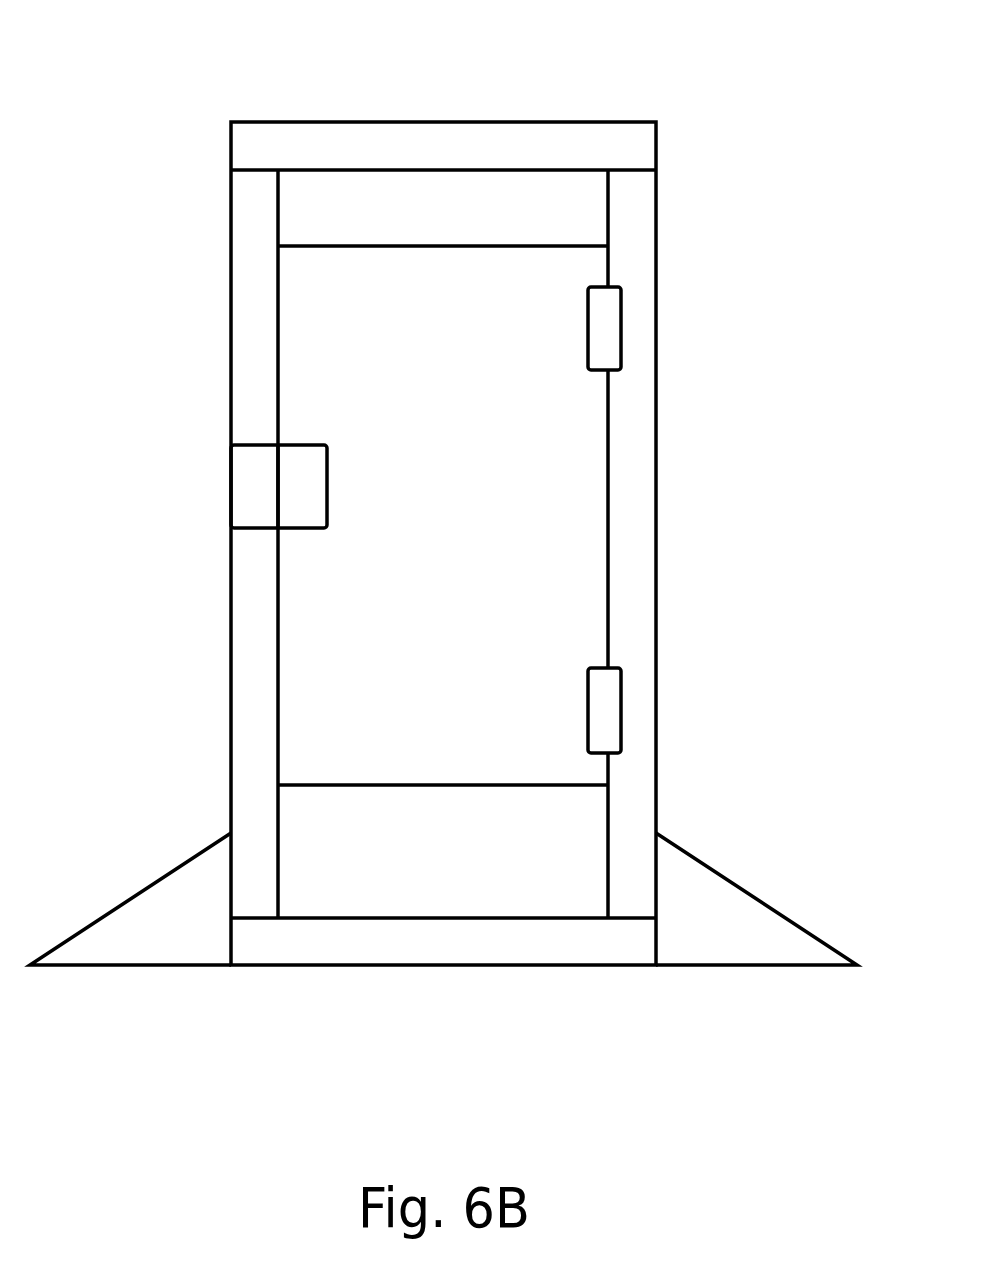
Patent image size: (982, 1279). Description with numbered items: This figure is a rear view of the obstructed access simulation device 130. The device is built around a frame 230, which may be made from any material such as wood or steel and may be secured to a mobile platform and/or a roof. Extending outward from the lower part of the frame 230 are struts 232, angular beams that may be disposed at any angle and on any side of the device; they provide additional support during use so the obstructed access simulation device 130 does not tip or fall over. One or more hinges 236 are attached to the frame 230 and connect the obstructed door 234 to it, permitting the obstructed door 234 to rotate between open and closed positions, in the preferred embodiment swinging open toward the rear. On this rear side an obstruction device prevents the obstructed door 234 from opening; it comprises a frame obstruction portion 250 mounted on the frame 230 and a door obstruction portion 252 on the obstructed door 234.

The obstructed access simulation device 130 is at (515, 92).
The frame 230 is at (656, 568).
The struts 232 is at (130, 900).
The obstructed door 234 is at (558, 420).
The hinges 236 is at (622, 328).
The frame obstruction portion 250 is at (252, 489).
The door obstruction portion 252 is at (300, 478).